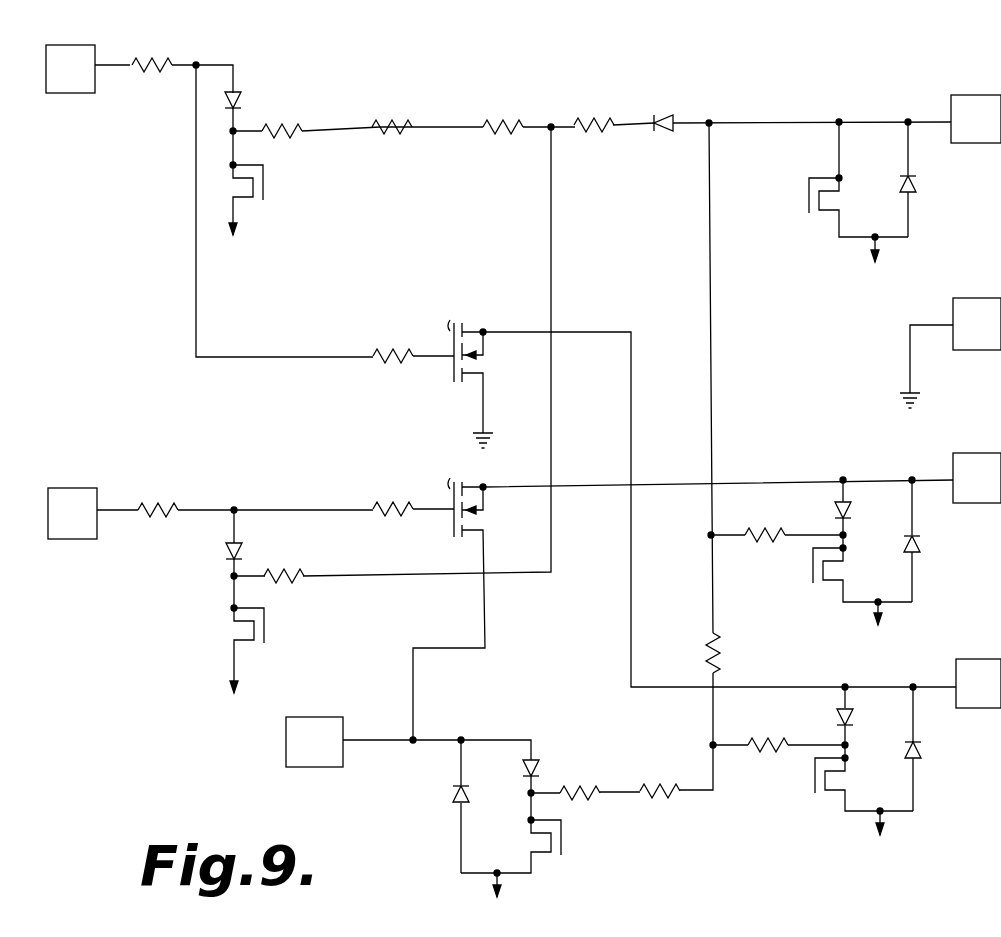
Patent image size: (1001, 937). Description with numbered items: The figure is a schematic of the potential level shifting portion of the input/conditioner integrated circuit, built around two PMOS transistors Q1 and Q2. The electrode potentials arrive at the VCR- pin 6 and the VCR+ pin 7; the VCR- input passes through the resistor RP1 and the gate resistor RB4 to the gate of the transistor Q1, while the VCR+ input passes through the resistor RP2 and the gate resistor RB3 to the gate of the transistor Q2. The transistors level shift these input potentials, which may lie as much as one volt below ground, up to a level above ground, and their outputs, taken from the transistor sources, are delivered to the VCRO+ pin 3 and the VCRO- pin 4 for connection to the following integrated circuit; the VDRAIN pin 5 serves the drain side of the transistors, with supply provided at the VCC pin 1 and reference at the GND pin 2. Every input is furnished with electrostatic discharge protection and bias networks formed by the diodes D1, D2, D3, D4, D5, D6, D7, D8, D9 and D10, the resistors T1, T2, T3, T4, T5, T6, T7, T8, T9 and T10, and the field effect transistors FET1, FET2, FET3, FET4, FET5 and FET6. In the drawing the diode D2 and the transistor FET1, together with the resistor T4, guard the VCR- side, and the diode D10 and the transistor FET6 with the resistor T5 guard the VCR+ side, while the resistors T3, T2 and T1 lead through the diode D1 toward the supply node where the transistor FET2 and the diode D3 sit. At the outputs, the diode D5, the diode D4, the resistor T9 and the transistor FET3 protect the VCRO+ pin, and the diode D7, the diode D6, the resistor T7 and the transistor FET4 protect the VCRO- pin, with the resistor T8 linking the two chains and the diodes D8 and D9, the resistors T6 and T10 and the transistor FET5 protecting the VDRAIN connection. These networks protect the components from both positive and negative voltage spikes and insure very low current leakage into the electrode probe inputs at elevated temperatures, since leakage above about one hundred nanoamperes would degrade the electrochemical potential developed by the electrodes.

The VCC pin 1 is at (976, 119).
The GND pin 2 is at (977, 324).
The VCRO+ pin 3 is at (977, 478).
The VCRO- pin 4 is at (978, 683).
The VDRAIN pin 5 is at (314, 742).
The VCR- pin 6 is at (70, 69).
The VCR+ pin 7 is at (72, 513).
The resistor RP1 is at (153, 65).
The resistor RP2 is at (159, 510).
The resistor RB3 is at (393, 508).
The resistor RB4 is at (393, 355).
The resistor T1 is at (594, 127).
The resistor T2 is at (503, 128).
The resistor T3 is at (392, 128).
The resistor T4 is at (282, 130).
The resistor T5 is at (284, 575).
The resistor T6 is at (580, 791).
The resistor T7 is at (768, 744).
The resistor T8 is at (737, 653).
The resistor T9 is at (765, 535).
The resistor T10 is at (660, 790).
The diode D1 is at (667, 111).
The diode D2 is at (248, 92).
The diode D3 is at (922, 185).
The diode D4 is at (928, 545).
The diode D5 is at (857, 508).
The diode D6 is at (928, 752).
The diode D7 is at (859, 715).
The diode D8 is at (545, 758).
The diode D9 is at (440, 794).
The diode D10 is at (253, 542).
The PMOS transistor Q1' Q1 is at (457, 351).
The PMOS transistor Q2' Q2 is at (456, 507).
The field effect transistor FET1 is at (257, 200).
The field effect transistor FET2 is at (808, 205).
The field effect transistor FET3 is at (814, 572).
The field effect transistor FET4 is at (813, 782).
The field effect transistor FET5 is at (558, 847).
The field effect transistor FET6 is at (260, 632).